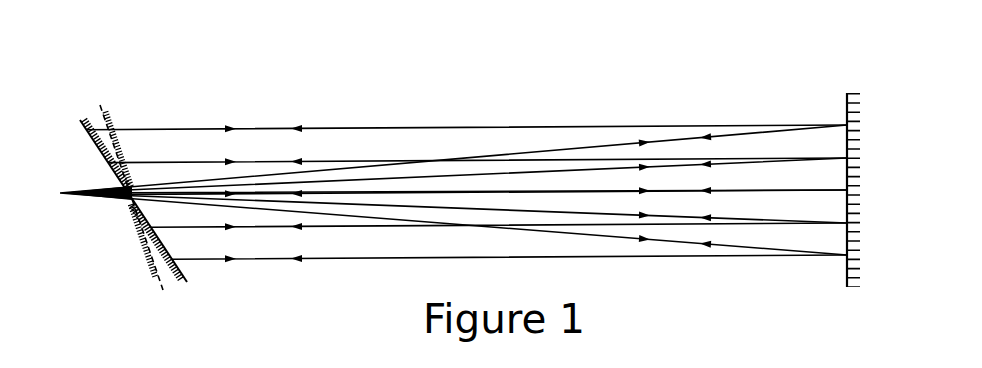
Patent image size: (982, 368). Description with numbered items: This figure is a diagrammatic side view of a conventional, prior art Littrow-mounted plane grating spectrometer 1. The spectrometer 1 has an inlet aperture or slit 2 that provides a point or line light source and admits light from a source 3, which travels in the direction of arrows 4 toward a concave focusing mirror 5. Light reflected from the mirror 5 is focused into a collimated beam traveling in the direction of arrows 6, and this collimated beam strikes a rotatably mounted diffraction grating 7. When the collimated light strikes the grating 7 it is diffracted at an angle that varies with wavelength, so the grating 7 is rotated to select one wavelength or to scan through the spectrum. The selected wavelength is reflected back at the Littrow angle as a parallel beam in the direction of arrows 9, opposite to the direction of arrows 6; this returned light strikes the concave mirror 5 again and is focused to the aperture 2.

The plane grating spectrometer 1 is at (253, 62).
The inlet aperture 2 is at (135, 205).
The light source 3 is at (60, 191).
The arrows 4 is at (650, 142).
The concave focusing mirror 5 is at (843, 107).
The arrows 6 is at (293, 127).
The diffraction grating 7 is at (80, 113).
The arrows 9 is at (230, 127).